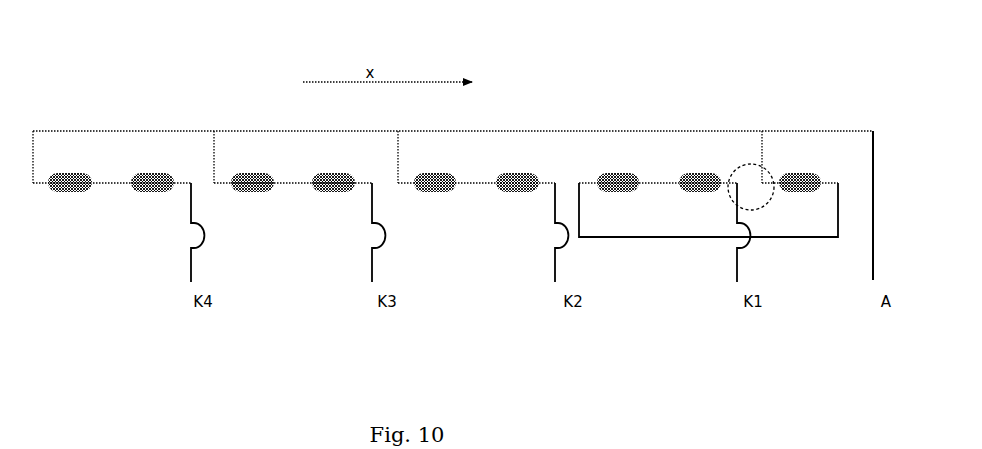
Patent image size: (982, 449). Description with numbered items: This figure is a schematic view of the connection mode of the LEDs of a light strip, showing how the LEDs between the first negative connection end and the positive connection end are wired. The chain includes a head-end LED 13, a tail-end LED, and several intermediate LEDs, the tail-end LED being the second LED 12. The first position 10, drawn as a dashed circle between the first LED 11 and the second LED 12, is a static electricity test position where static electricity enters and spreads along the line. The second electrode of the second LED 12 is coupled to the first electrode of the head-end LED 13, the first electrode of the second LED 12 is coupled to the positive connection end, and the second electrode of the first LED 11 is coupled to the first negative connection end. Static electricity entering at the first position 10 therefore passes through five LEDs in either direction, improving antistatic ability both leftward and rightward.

The first position 10 is at (755, 213).
The first LED 11 is at (698, 168).
The second LED 12 is at (800, 168).
The head-end LED 13 is at (605, 172).